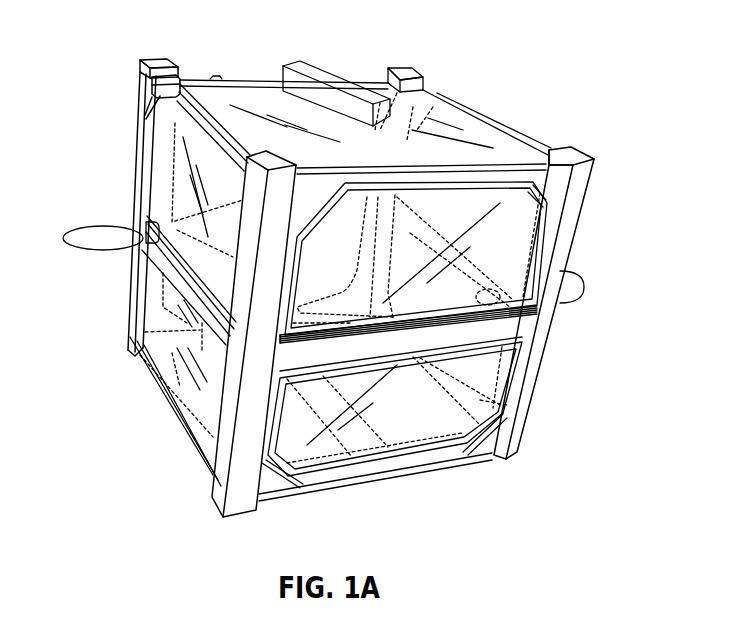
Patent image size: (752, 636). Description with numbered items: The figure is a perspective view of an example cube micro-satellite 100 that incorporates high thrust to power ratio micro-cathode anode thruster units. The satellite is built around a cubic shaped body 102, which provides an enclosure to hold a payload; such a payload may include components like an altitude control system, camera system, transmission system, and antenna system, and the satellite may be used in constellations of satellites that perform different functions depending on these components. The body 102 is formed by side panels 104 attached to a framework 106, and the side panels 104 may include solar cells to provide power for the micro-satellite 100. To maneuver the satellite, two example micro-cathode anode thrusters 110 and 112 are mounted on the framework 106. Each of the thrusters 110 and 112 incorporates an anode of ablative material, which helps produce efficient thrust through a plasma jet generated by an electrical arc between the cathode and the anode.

The cube micro-satellite 100 is at (292, 45).
The cubic shaped body 102 is at (374, 80).
The side panels 104 is at (423, 415).
The framework 106 is at (571, 148).
The micro-cathode anode thruster 110 is at (149, 222).
The micro-cathode anode thruster 112 is at (515, 319).